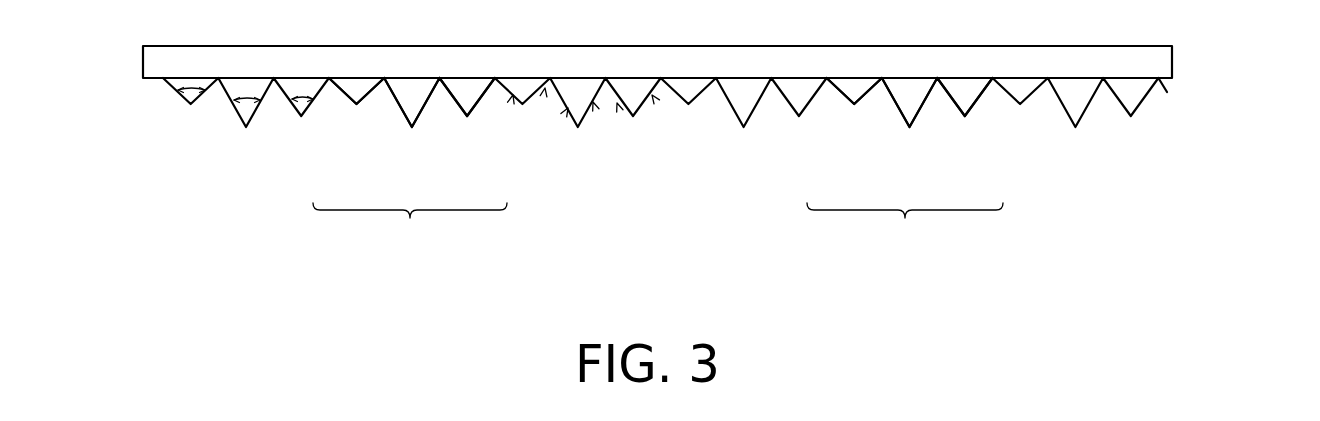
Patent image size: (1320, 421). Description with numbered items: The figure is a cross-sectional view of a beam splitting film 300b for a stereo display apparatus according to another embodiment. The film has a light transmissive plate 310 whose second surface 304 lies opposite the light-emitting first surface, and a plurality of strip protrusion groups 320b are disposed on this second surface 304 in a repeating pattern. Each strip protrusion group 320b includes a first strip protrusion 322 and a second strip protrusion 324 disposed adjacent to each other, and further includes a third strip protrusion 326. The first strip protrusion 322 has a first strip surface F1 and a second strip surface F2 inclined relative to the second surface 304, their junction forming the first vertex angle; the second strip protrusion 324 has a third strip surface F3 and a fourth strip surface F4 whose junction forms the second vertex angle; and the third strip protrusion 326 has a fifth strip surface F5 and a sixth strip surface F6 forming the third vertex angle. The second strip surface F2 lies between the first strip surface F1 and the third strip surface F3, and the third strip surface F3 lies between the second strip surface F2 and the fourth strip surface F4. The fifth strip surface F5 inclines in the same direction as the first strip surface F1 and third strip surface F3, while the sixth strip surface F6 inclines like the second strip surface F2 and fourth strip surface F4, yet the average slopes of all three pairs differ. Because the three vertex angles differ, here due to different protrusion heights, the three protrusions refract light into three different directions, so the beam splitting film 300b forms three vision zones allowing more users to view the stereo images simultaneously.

The beam splitting film 300b is at (714, 135).
The light transmissive plate 310 is at (1163, 62).
The second surface 304 is at (1137, 82).
The strip protrusion group 320b is at (658, 170).
The first strip protrusion 322 is at (357, 88).
The second strip protrusion 324 is at (410, 97).
The third strip protrusion 326 is at (473, 95).
The first strip surface F1 is at (513, 96).
The second strip surface F2 is at (545, 89).
The third strip surface F3 is at (568, 109).
The fourth strip surface F4 is at (593, 103).
The fifth strip surface F5 is at (617, 104).
The sixth strip surface F6 is at (652, 96).